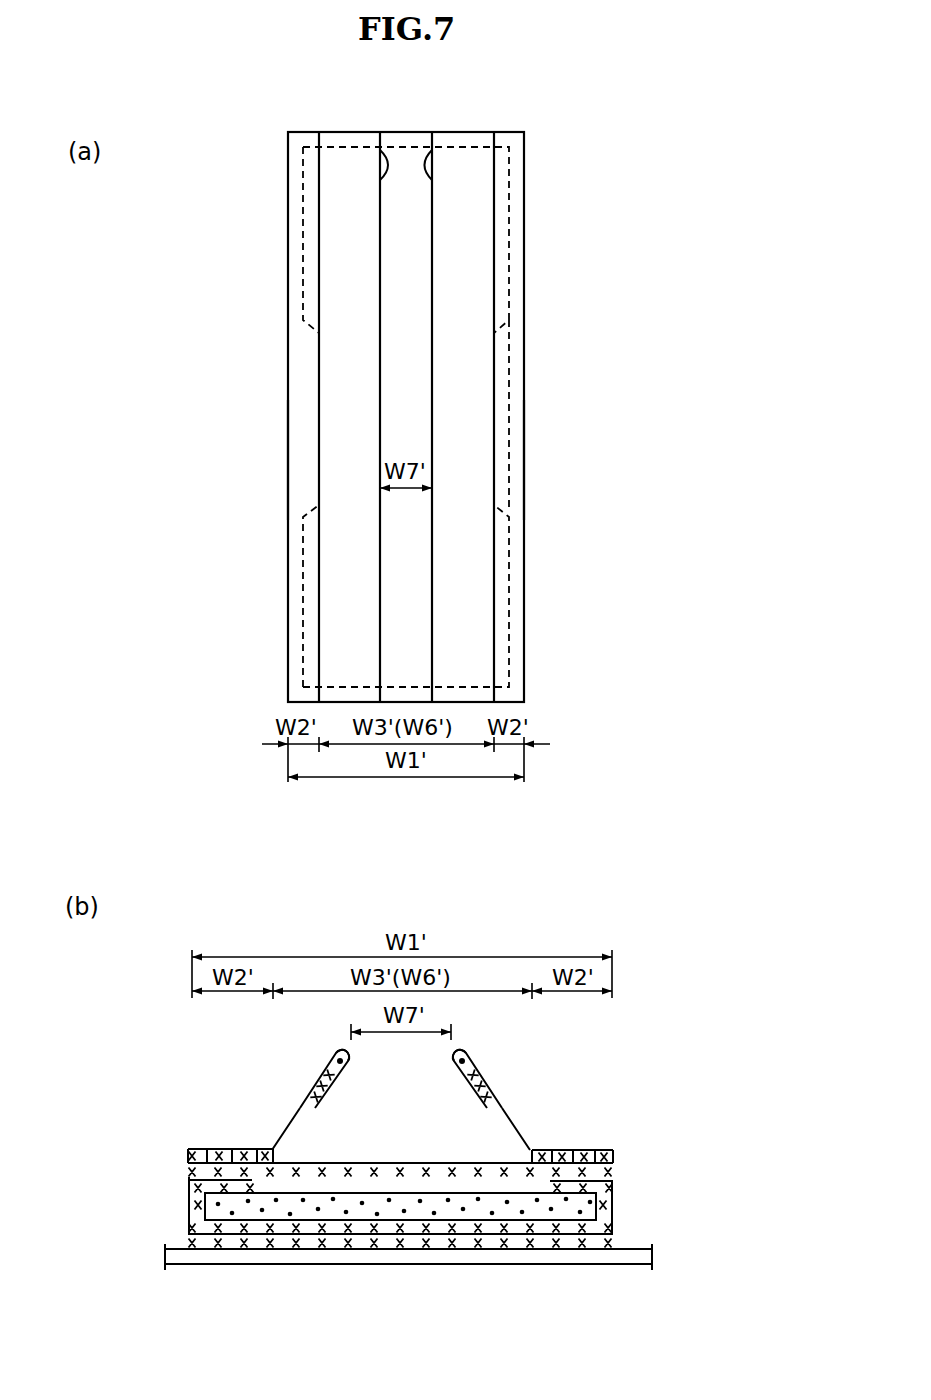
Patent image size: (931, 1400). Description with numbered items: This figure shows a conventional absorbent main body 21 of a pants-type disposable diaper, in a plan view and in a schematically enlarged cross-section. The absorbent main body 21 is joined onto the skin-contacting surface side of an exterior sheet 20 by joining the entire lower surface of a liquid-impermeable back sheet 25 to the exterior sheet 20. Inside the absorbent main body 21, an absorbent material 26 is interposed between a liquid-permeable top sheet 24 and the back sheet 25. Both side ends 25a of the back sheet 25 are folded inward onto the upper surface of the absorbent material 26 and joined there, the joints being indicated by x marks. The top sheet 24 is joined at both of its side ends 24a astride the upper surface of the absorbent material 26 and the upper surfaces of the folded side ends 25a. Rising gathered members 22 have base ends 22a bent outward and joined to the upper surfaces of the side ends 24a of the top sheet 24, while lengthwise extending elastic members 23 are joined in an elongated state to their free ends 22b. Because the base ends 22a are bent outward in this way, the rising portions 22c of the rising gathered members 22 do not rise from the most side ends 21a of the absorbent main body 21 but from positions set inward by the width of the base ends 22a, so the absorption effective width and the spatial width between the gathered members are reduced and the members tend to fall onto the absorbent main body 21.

The exterior sheet 20 is at (651, 1262).
The absorbent main body 21 is at (530, 507).
The most side ends of absorbent main body 21a is at (287, 458).
The rising gathered member 22 is at (300, 393).
The base end of rising gathered member 22a is at (300, 343).
The free end of rising gathered member 22b is at (381, 150).
The rising portion 22c is at (288, 1130).
The elastic member 23 is at (333, 1060).
The top sheet 24 is at (412, 622).
The side end of top sheet 24a is at (205, 1148).
The back sheet 25 is at (190, 1220).
The side end of back sheet 25a is at (232, 1178).
The absorbent material 26 is at (388, 1212).